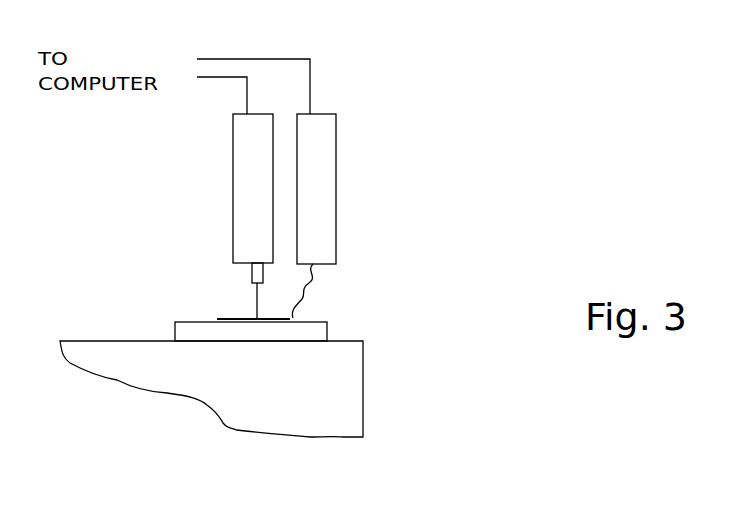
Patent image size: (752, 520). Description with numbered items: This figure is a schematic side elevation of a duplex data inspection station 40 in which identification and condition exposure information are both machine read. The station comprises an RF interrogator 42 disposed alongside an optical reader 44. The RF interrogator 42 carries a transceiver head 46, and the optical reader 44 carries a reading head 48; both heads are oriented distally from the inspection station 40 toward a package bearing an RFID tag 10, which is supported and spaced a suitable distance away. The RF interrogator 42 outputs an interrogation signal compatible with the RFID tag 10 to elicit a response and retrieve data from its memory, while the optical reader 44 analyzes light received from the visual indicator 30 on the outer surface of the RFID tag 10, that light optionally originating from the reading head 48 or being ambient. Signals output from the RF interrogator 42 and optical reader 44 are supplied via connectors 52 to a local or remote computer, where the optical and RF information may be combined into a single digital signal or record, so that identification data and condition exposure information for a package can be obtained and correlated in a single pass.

The RFID tag 10 is at (193, 328).
The visual indicator 30 is at (290, 320).
The data inspection station 40 is at (444, 77).
The RF interrogator 42 is at (328, 203).
The optical reader 44 is at (243, 201).
The transceiver head 46 is at (325, 268).
The reading head 48 is at (252, 274).
The connectors 52 is at (220, 59).